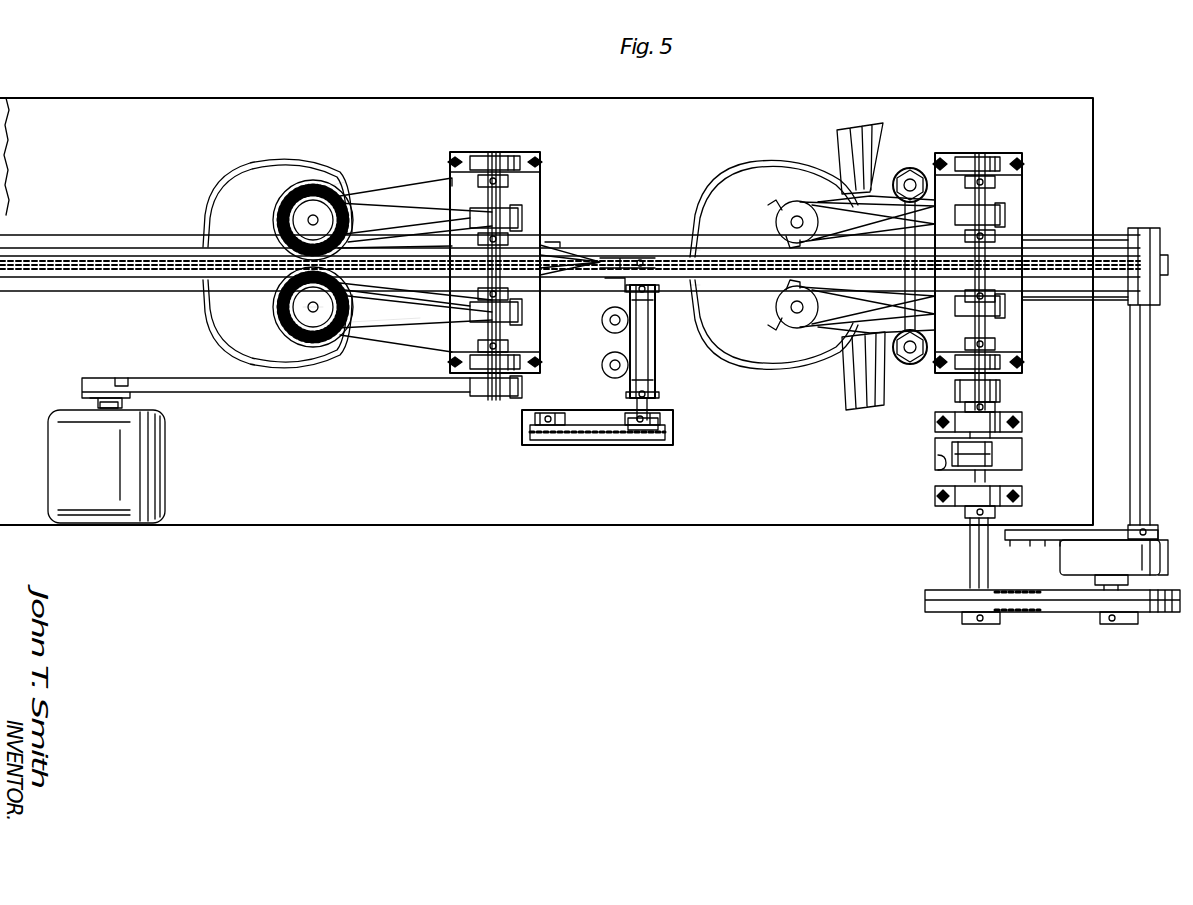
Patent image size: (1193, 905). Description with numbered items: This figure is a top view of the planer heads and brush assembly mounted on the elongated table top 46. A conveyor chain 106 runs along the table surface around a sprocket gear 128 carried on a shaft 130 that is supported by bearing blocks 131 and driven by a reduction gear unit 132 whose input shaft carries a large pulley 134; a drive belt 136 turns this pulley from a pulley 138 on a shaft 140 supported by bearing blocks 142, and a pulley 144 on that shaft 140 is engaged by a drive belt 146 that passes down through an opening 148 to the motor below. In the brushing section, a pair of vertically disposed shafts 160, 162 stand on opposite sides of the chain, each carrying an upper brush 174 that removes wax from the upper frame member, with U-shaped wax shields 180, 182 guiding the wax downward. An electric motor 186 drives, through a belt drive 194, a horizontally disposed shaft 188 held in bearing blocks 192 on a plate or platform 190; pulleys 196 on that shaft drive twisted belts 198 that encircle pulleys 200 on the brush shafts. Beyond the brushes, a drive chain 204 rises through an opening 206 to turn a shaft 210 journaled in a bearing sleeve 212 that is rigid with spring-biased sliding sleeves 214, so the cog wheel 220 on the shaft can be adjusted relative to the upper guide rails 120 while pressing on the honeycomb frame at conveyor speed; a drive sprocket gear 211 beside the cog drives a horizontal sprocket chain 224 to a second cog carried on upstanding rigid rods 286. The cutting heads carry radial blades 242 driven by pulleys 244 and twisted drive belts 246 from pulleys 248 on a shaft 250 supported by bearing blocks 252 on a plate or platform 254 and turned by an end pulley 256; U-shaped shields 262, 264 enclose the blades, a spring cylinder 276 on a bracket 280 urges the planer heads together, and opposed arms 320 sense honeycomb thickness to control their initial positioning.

The table top 46 is at (768, 488).
The conveyor chain 106 is at (52, 252).
The upper guide rails 120 is at (1046, 248).
The sprocket gear 128 is at (1118, 286).
The bearing blocks 131 is at (1160, 230).
The shaft 130 is at (1140, 428).
The reduction gear unit 132 is at (1082, 556).
The large pulley 134 is at (1156, 612).
The drive belt 136 is at (1060, 600).
The pulley 138 is at (1010, 612).
The shaft 140 is at (974, 548).
The bearing blocks 142 is at (960, 420).
The pulley 144 is at (1012, 465).
The drive belt 146 is at (958, 457).
The opening 148 is at (940, 472).
The vertically disposed shaft 160 is at (298, 224).
The vertically disposed shaft 162 is at (300, 320).
The upper brush 174 is at (322, 192).
The wax shield 180 is at (262, 162).
The wax shield 182 is at (215, 300).
The electric motor 186 is at (65, 450).
The horizontally disposed shaft 188 is at (495, 262).
The plate or platform 190 is at (530, 198).
The bearing blocks 192 is at (488, 158).
The belt drive 194 is at (342, 392).
The pulleys 196 is at (470, 318).
The twisted belts 198 is at (382, 318).
The pulleys 200 is at (298, 307).
The drive chain 204 is at (607, 444).
The opening 206 is at (563, 446).
The shaft 210 is at (660, 410).
The drive sprocket gear 211 is at (612, 285).
The bearing sleeve 212 is at (655, 348).
The vertically disposed sleeves 214 is at (601, 322).
The cog wheel 220 is at (640, 258).
The sprocket chain 224 is at (700, 305).
The blades 242 is at (768, 207).
The pulleys 244 is at (797, 318).
The twisted drive belts 246 is at (822, 200).
The pulleys 248 is at (1003, 212).
The shaft 250 is at (975, 198).
The bearing blocks 252 is at (964, 156).
The plate or platform 254 is at (1005, 338).
The end pulley 256 is at (1000, 400).
The shield 262 is at (706, 198).
The shield 264 is at (735, 368).
The cylinder 276 is at (848, 140).
The bracket 280 is at (845, 396).
The upstanding rigid rods 286 is at (910, 168).
The opposed arms 320 is at (586, 248).